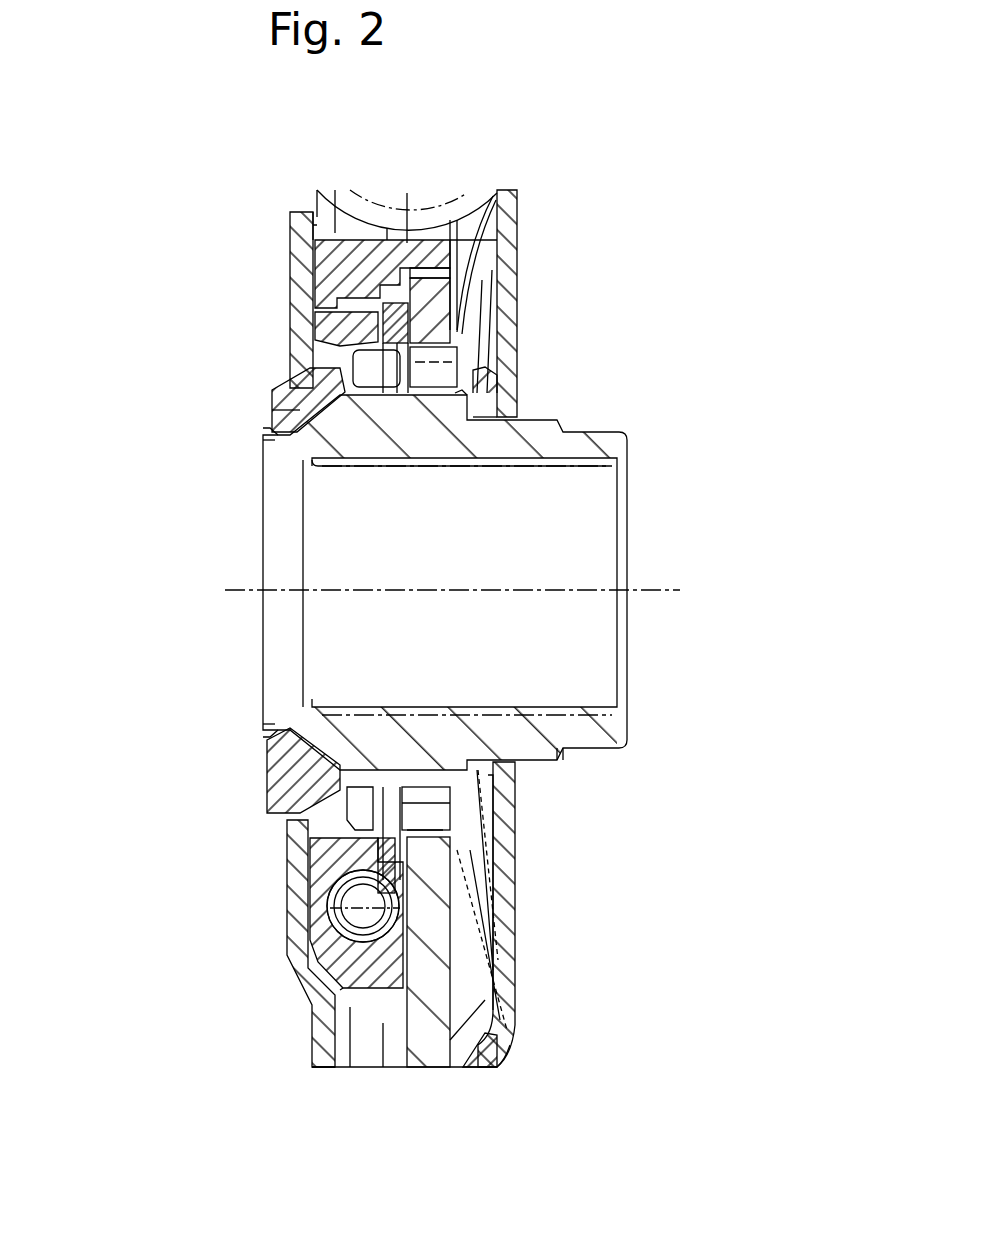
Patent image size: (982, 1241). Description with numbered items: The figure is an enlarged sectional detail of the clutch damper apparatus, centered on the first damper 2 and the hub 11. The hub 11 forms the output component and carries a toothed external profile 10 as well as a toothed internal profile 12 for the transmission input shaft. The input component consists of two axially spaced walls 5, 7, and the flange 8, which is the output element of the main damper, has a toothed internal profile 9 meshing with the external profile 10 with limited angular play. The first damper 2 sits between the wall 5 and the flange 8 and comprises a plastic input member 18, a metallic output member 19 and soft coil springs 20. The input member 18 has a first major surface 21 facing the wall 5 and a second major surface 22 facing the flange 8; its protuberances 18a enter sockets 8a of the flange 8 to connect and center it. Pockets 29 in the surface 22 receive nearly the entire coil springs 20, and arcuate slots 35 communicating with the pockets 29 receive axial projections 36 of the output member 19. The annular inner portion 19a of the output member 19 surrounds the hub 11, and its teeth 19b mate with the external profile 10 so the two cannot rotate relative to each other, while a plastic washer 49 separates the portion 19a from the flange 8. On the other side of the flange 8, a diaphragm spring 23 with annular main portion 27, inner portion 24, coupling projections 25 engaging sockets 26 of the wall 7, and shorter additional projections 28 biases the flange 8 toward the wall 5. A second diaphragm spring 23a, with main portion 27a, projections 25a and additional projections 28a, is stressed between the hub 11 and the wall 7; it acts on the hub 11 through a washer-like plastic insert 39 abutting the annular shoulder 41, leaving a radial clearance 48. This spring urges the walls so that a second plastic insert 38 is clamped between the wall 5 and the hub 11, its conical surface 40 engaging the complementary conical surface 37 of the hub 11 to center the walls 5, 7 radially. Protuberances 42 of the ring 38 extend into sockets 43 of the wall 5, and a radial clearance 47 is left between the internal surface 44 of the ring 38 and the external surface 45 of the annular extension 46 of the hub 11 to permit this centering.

The first damper 2 is at (255, 942).
The wall 5 is at (318, 277).
The wall 7 is at (518, 212).
The flange 8 is at (450, 1070).
The sockets 8a is at (487, 262).
The toothed internal profile 9 is at (405, 832).
The toothed external profile 10 is at (370, 803).
The hub 11 is at (527, 735).
The toothed internal profile 12 is at (560, 706).
The input member 18 is at (300, 232).
The protuberances 18a is at (497, 244).
The output member 19 is at (326, 311).
The annular inner portion 19a is at (420, 846).
The teeth 19b is at (400, 812).
The coil springs 20 is at (290, 975).
The first major surface 21 is at (313, 289).
The second major surface 22 is at (510, 983).
The diaphragm spring 23 is at (452, 289).
The diaphragm spring 23a is at (470, 378).
The inner portion 24 is at (440, 318).
The projections 25 is at (513, 1003).
The projections 25a is at (512, 947).
The sockets 26 is at (512, 1040).
The annular main portion 27 is at (468, 305).
The annular main portion 27a is at (485, 397).
The additional projections 28 is at (518, 188).
The additional projections 28a is at (420, 342).
The pockets 29 is at (287, 957).
The arcuate slots 35 is at (305, 883).
The projections 36 is at (425, 905).
The conical surface 37 is at (388, 480).
The second plastic insert 38 is at (284, 406).
The plastic insert 39 is at (475, 398).
The conical surface 40 is at (284, 388).
The annular shoulder 41 is at (483, 470).
The protuberances 42 is at (280, 800).
The socket 43 is at (288, 822).
The internal surface 44 is at (262, 730).
The external surface 45 is at (267, 745).
The annular extension 46 is at (262, 448).
The radial clearance 47 is at (262, 427).
The radial clearance 48 is at (478, 405).
The plastic washer 49 is at (430, 868).